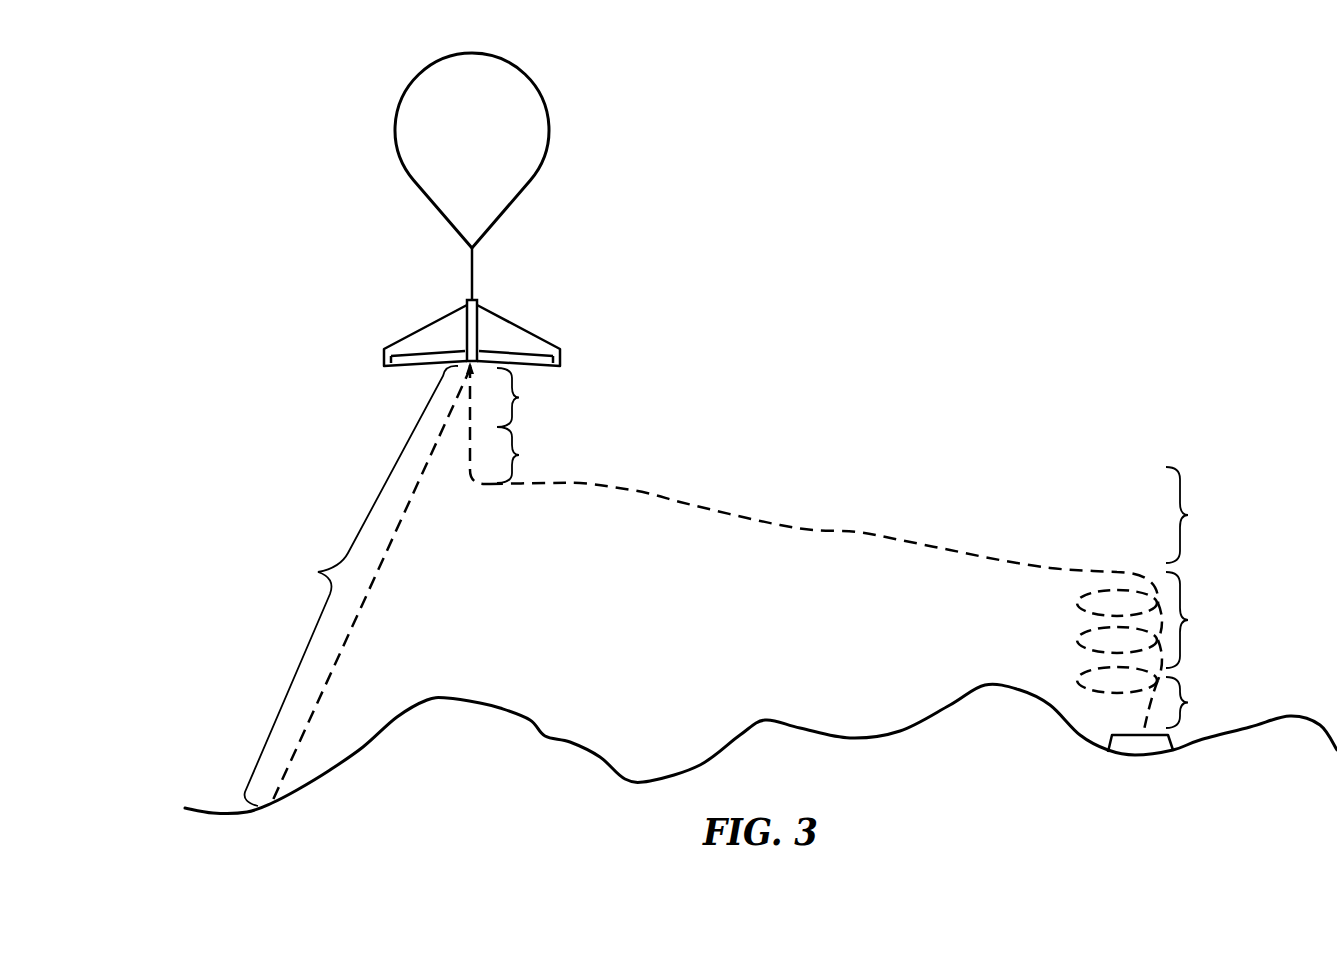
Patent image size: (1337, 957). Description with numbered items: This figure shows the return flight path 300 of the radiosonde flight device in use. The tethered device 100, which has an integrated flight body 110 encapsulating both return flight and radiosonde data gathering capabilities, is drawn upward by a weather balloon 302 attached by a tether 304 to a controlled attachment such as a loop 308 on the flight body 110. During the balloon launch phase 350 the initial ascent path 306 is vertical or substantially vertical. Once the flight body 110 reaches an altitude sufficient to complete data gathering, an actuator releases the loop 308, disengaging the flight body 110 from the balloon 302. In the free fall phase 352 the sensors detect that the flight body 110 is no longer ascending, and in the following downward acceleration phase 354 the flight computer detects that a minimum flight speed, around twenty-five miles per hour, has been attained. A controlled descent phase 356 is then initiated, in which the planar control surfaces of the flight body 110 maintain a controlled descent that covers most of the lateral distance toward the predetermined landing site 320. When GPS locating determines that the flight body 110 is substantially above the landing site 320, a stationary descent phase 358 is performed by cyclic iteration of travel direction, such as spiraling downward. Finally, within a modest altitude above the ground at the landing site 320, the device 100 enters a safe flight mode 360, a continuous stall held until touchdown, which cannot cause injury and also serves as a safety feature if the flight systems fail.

The tethered device 100 is at (398, 320).
The flight body 110 is at (471, 322).
The return flight path 300 is at (858, 532).
The weather balloon 302 is at (490, 119).
The tether 304 is at (474, 258).
The initial ascent path 306 is at (370, 587).
The loop 308 is at (477, 300).
The predetermined landing site 320 is at (1120, 744).
The balloon launch phase 350 is at (351, 586).
The free fall phase 352 is at (516, 396).
The downward acceleration phase 354 is at (516, 455).
The controlled descent phase 356 is at (1199, 515).
The stationary descent phase 358 is at (1155, 632).
The safe flight mode 360 is at (1188, 706).